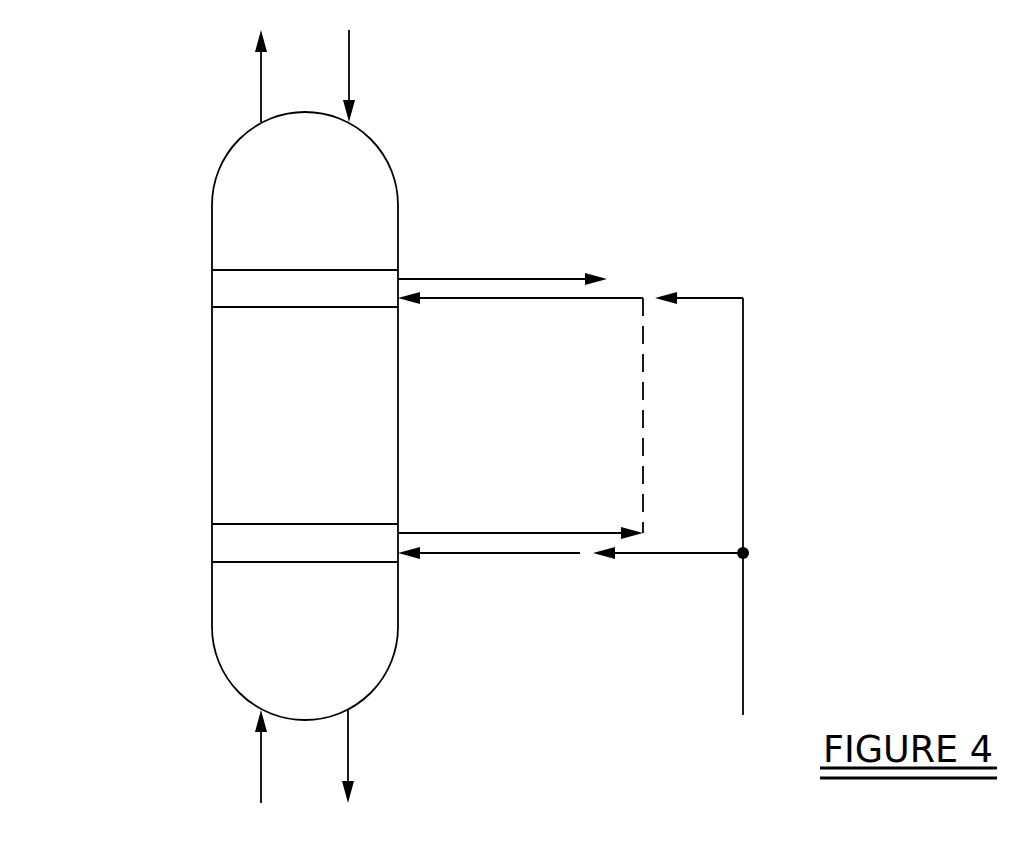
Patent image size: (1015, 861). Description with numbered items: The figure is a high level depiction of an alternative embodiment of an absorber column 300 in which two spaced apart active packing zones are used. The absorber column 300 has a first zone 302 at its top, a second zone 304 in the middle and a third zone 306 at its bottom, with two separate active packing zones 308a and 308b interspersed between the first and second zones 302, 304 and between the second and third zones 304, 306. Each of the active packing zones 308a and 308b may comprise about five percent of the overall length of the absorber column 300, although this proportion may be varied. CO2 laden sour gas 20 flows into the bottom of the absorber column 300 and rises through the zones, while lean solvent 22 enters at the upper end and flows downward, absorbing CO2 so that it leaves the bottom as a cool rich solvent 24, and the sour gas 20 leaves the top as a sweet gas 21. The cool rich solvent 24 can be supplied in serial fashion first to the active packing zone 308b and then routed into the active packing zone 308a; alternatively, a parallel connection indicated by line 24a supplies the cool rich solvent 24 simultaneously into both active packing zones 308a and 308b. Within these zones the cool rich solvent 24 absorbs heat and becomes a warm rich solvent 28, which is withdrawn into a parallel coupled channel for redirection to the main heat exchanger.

The absorber column 300 is at (273, 416).
The first zone 302 is at (372, 180).
The second zone 304 is at (233, 412).
The third zone 306 is at (372, 650).
The active packing zone 308a is at (227, 287).
The active packing zone 308b is at (227, 545).
The CO2 laden gas 20 is at (261, 750).
The sweet gas 21 is at (261, 80).
The lean solvent 22 is at (349, 80).
The cool rich solvent 24 is at (562, 555).
The line 24a is at (743, 385).
The warm rich solvent 28 is at (572, 278).